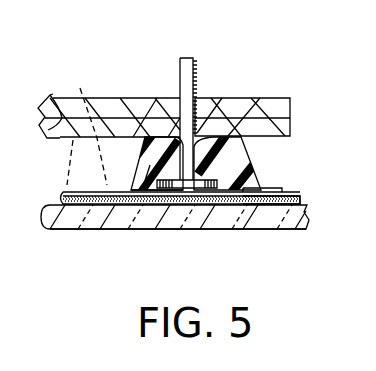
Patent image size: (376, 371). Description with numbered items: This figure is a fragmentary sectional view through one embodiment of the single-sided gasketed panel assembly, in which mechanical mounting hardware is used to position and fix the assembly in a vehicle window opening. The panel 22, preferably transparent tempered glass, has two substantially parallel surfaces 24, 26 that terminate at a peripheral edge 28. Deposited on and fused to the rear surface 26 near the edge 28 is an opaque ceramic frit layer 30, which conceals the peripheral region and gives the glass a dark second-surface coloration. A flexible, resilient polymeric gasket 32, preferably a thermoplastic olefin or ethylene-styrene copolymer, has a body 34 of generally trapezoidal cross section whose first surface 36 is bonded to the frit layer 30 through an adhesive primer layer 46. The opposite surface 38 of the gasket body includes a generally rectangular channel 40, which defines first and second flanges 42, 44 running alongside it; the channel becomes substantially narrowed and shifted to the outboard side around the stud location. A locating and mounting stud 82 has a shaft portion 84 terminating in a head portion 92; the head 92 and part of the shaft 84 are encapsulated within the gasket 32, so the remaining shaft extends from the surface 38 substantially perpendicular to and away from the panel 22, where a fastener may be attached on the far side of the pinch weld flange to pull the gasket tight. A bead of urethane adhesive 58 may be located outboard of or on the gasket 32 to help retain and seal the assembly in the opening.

The locating and mounting stud 82 is at (190, 57).
The shaft portion 84 is at (196, 73).
The opposite surface 38 is at (174, 133).
The channel 40 is at (109, 116).
The first flange 42 is at (145, 134).
The second flange 44 is at (278, 134).
The gasket 32 is at (254, 156).
The urethane adhesive 58 is at (79, 129).
The head portion 92 is at (221, 204).
The ceramic frit layer 30 is at (58, 204).
The adhesive primer layer 46 is at (62, 197).
The first surface 36 is at (247, 204).
The panel 22 is at (186, 210).
The peripheral edge 28 is at (43, 226).
The surface 24 is at (86, 229).
The surface 26 is at (122, 212).
The body 34 is at (137, 205).